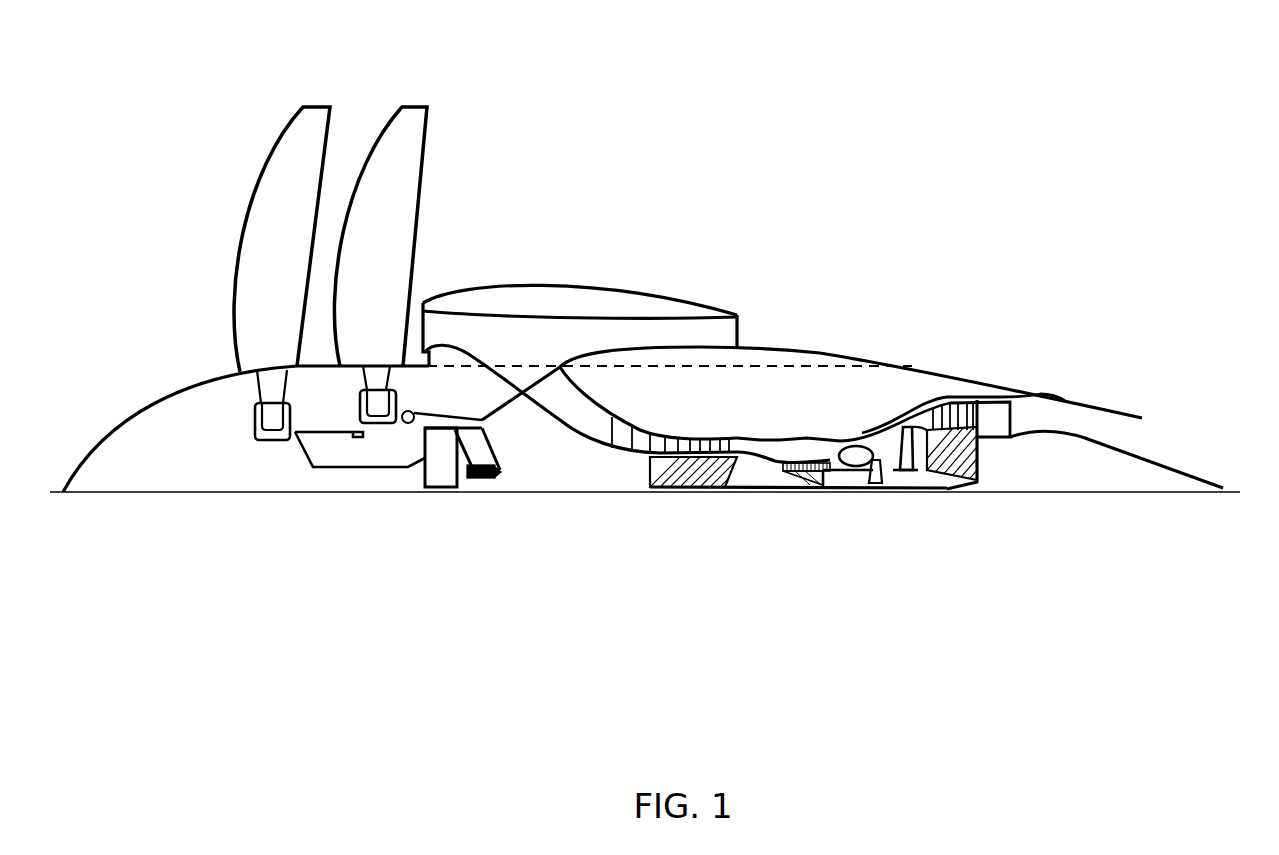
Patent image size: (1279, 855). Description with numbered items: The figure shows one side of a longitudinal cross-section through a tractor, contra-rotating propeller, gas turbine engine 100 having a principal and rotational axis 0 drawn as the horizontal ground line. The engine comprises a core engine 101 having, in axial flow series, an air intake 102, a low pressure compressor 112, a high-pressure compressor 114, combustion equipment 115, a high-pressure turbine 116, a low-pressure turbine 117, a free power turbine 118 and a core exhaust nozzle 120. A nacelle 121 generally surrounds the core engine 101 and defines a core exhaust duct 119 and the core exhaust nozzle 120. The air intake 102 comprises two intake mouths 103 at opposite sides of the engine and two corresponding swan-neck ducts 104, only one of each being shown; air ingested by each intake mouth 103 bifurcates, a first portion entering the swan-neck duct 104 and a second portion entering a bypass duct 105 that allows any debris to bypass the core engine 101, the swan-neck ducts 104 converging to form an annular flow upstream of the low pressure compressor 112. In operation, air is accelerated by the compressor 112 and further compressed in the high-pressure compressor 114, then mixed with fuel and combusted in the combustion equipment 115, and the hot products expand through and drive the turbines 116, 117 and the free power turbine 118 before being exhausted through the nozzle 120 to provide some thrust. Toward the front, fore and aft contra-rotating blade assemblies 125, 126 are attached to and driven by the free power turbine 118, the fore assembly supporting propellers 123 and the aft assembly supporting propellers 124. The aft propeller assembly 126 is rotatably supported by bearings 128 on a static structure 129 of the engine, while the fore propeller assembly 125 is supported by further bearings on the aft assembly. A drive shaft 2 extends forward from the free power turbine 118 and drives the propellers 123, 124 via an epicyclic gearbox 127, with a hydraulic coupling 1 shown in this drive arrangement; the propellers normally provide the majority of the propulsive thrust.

The principal and rotational axis 0 is at (645, 493).
The hydraulic coupling 1 is at (497, 456).
The drive shaft 2 is at (640, 472).
The gas turbine engine 100 is at (938, 157).
The core engine 101 is at (796, 445).
The air intake 102 is at (534, 330).
The intake mouth 103 is at (426, 302).
The swan-neck duct 104 is at (570, 410).
The bypass duct 105 is at (668, 333).
The low pressure compressor 112 is at (673, 460).
The high-pressure compressor 114 is at (797, 472).
The combustion equipment 115 is at (848, 466).
The high-pressure turbine 116 is at (900, 478).
The low-pressure turbine 117 is at (940, 464).
The free power turbine 118 is at (982, 464).
The core exhaust duct 119 is at (1060, 408).
The core exhaust nozzle 120 is at (1143, 438).
The nacelle 121 is at (790, 383).
The propellers 123 is at (283, 172).
The propellers 124 is at (400, 140).
The fore contra-rotating blade assembly 125 is at (195, 457).
The aft contra-rotating blade assembly 126 is at (325, 387).
The epicyclic gearbox 127 is at (428, 485).
The bearings 128 is at (411, 414).
The static structure 129 is at (355, 433).